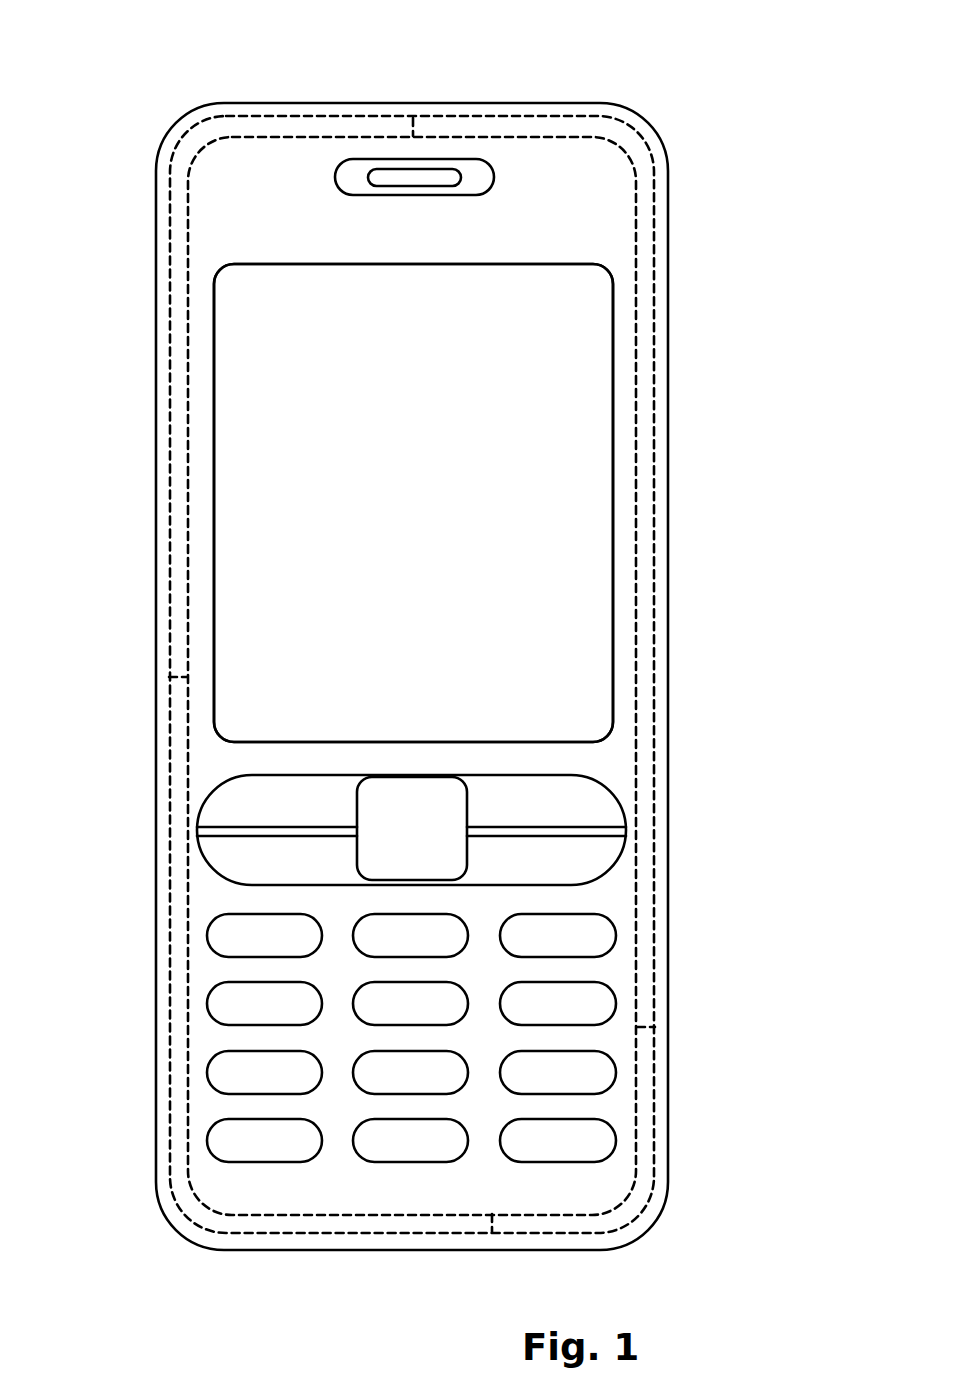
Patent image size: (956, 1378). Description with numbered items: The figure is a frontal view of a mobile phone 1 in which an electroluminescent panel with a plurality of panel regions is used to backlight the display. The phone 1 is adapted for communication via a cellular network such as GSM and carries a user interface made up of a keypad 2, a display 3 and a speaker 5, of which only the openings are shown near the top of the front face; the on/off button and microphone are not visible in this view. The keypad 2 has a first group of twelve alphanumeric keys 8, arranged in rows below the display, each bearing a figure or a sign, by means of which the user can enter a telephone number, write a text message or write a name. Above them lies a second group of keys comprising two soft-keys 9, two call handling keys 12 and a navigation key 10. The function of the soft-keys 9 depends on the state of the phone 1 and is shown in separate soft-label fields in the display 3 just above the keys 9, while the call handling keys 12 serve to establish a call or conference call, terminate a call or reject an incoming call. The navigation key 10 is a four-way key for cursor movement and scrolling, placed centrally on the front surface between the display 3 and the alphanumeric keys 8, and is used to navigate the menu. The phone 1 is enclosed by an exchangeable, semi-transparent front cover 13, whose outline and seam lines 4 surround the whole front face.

The phone 1 is at (720, 87).
The keypad 2 is at (165, 960).
The display 3 is at (555, 512).
The housing seam lines 4 is at (178, 708).
The speaker 5 is at (392, 177).
The alphanumeric keys 8 is at (582, 1140).
The soft-keys 9 is at (237, 801).
The navigation key 10 is at (427, 813).
The call handling keys 12 is at (243, 858).
The front cover 13 is at (198, 487).